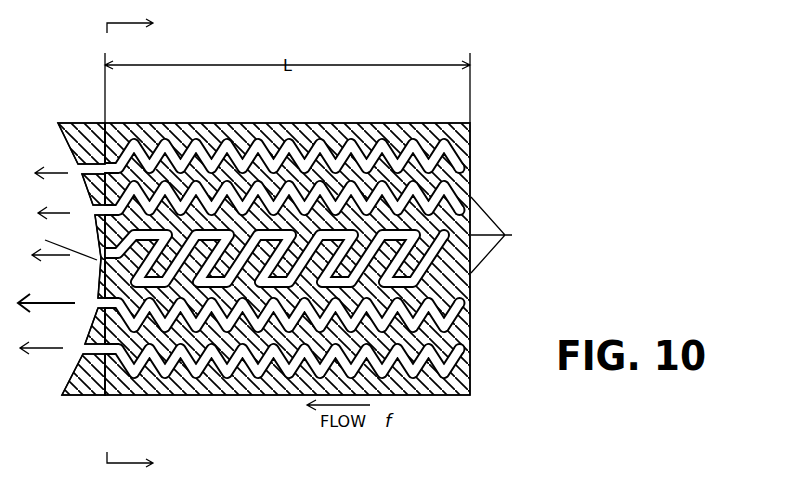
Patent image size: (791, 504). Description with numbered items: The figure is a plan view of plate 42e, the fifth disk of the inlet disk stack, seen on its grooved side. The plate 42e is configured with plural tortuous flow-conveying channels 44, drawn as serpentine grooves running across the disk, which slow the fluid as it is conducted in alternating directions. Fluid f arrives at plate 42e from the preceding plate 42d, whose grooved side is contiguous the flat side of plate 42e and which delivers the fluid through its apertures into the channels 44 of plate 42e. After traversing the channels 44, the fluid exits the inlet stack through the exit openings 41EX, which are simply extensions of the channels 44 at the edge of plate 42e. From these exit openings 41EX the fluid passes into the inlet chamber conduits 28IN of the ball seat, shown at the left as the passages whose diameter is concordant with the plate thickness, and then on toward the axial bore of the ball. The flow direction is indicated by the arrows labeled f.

The exit openings 41EX is at (113, 160).
The inlet chamber conduits 28IN is at (62, 395).
The channels 44 is at (284, 376).
The plate 42e is at (427, 403).
The plate 42d is at (569, 235).